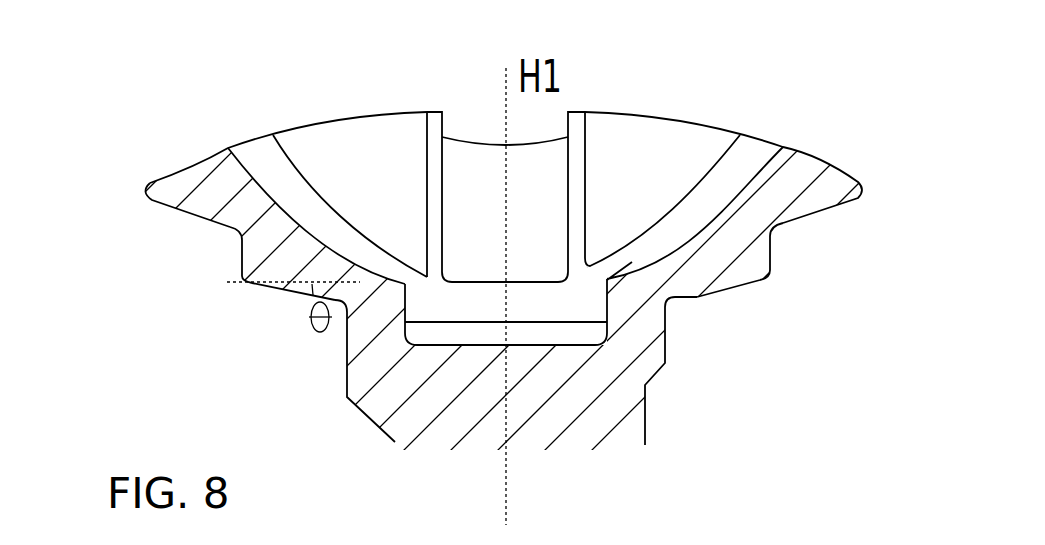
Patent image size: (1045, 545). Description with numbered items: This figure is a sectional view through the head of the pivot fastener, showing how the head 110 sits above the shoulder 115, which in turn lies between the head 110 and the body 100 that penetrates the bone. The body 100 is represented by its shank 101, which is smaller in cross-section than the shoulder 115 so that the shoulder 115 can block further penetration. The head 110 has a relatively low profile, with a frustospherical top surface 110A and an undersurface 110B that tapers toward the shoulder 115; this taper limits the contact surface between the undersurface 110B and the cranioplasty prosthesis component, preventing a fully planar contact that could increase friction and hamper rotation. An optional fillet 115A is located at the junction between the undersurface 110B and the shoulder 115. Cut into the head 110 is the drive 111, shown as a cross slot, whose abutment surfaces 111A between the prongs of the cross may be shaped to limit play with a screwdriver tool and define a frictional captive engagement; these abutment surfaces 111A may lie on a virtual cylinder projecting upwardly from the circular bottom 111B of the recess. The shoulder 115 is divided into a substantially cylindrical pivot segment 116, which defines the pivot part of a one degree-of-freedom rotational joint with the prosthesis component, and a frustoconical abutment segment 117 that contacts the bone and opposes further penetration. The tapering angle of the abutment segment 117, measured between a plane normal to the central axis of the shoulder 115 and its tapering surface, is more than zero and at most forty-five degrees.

The body 100 is at (352, 441).
The shank 101 is at (348, 333).
The head 110 is at (94, 212).
The top surface 110A is at (198, 157).
The undersurface 110B is at (175, 207).
The drive 111 is at (340, 145).
The abutment surfaces 111A is at (433, 143).
The circular bottom 111B is at (602, 303).
The shoulder 115 is at (810, 266).
The fillet 115A is at (238, 262).
The pivot segment 116 is at (771, 272).
The abutment segment 117 is at (702, 298).